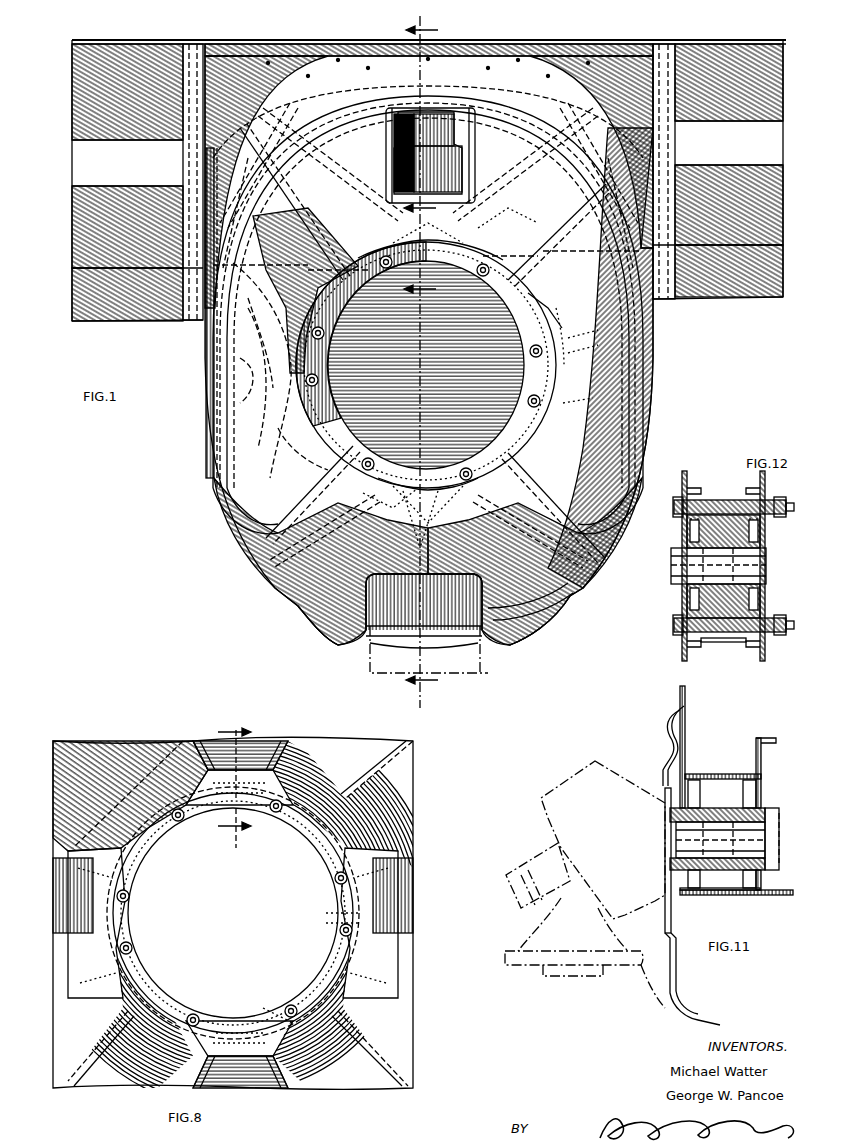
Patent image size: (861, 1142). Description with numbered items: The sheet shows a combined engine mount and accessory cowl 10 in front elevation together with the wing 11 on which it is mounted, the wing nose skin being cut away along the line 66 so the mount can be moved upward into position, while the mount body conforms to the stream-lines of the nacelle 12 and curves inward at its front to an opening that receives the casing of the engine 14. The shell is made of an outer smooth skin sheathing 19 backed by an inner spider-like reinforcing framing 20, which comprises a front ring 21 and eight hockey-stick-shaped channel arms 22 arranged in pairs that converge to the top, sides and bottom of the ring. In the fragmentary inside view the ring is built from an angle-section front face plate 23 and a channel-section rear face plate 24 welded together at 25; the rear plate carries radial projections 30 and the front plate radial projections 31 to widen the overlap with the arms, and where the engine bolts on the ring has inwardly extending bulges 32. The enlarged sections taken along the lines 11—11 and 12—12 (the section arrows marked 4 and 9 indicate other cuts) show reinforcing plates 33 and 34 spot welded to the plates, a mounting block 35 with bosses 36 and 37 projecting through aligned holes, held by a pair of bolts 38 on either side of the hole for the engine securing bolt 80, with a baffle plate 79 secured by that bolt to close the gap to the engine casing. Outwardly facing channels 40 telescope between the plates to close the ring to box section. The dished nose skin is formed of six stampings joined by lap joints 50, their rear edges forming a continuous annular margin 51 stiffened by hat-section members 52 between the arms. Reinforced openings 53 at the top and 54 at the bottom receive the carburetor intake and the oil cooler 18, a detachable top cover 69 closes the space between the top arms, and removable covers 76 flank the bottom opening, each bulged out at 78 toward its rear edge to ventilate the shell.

In FIG. 1, the section line 4- 4 is at (406, 17).
In FIG. 1, the section line 9- 9 is at (422, 257).
In FIG. 8, the section line 9- 9 is at (234, 780).
In FIG. 1, the combined engine mount and accessory cowl 10 is at (640, 382).
In FIG. 1, the wing 11 is at (712, 295).
In FIG. 1, the nacelle 12 is at (425, 262).
In FIG. 11, the engine 14 is at (510, 945).
In FIG. 1, the oil cooler 18 is at (440, 652).
In FIG. 1, the skin sheathing 19 is at (252, 147).
In FIG. 11, the skin sheathing 19 is at (671, 683).
In FIG. 8, the skin sheathing 19 is at (338, 1075).
In FIG. 1, the reinforcing spider-like framing 20 is at (262, 365).
In FIG. 8, the reinforcing spider-like framing 20 is at (120, 868).
In FIG. 1, the front ring 21 is at (500, 306).
In FIG. 11, the front ring 21 is at (716, 888).
In FIG. 8, the front ring 21 is at (302, 842).
In FIG. 1, the arms 22 is at (264, 112).
In FIG. 8, the arms 22 is at (280, 745).
In FIG. 12, the front face plate 23 is at (672, 524).
In FIG. 11, the front face plate 23 is at (656, 776).
In FIG. 12, the rear face plate 24 is at (758, 524).
In FIG. 11, the rear face plate 24 is at (753, 772).
In FIG. 8, the rear face plate 24 is at (315, 855).
In FIG. 11, the weld 25 is at (764, 884).
In FIG. 1, the radial projections 30 is at (556, 345).
In FIG. 8, the radial projections 30 is at (276, 756).
In FIG. 1, the radial projections 31 is at (468, 225).
In FIG. 8, the radial projections 31 is at (178, 755).
In FIG. 1, the inwardly extending bulges 32 is at (520, 296).
In FIG. 8, the inwardly extending bulges 32 is at (330, 922).
In FIG. 12, the reinforcing plate 33 is at (686, 650).
In FIG. 11, the reinforcing plate 33 is at (690, 778).
In FIG. 12, the reinforcing plate 34 is at (748, 648).
In FIG. 11, the reinforcing plate 34 is at (742, 778).
In FIG. 1, the mounting block 35 is at (424, 368).
In FIG. 12, the mounting block 35 is at (722, 638).
In FIG. 11, the mounting block 35 is at (720, 810).
In FIG. 8, the mounting block 35 is at (170, 815).
In FIG. 12, the boss 36 is at (676, 592).
In FIG. 12, the boss 37 is at (758, 585).
In FIG. 12, the bolts 38 is at (770, 494).
In FIG. 1, the outwardly facing channels 40 is at (440, 470).
In FIG. 11, the outwardly facing channels 40 is at (706, 766).
In FIG. 8, the outwardly facing channels 40 is at (335, 840).
In FIG. 1, the lap joints 50 is at (330, 244).
In FIG. 8, the lap joints 50 is at (80, 1054).
In FIG. 1, the annular margin 51 is at (568, 168).
In FIG. 1, the hat-section members 52 is at (270, 150).
In FIG. 1, the opening 53 is at (445, 90).
In FIG. 1, the opening 54 is at (432, 625).
In FIG. 1, the cut-away line 66 is at (585, 85).
In FIG. 1, the top cover 69 is at (525, 60).
In FIG. 1, the removable cover 76 is at (318, 633).
In FIG. 1, the bulged portion 78 is at (527, 630).
In FIG. 11, the baffle plate 79 is at (655, 752).
In FIG. 11, the engine securing bolt 80 is at (771, 808).